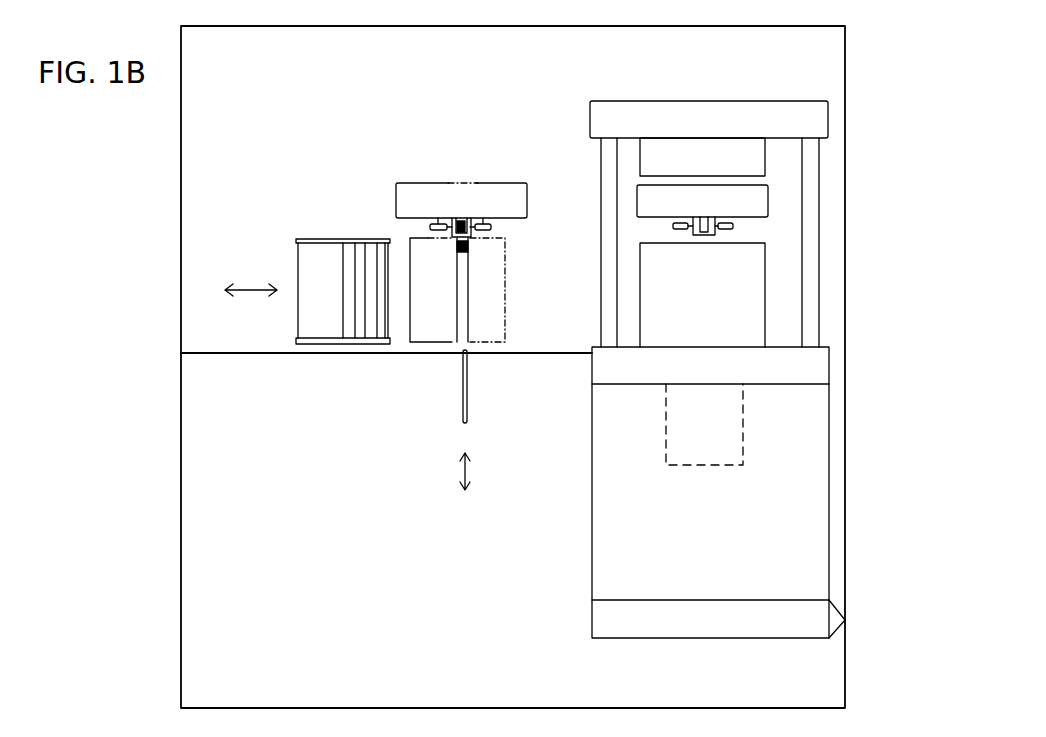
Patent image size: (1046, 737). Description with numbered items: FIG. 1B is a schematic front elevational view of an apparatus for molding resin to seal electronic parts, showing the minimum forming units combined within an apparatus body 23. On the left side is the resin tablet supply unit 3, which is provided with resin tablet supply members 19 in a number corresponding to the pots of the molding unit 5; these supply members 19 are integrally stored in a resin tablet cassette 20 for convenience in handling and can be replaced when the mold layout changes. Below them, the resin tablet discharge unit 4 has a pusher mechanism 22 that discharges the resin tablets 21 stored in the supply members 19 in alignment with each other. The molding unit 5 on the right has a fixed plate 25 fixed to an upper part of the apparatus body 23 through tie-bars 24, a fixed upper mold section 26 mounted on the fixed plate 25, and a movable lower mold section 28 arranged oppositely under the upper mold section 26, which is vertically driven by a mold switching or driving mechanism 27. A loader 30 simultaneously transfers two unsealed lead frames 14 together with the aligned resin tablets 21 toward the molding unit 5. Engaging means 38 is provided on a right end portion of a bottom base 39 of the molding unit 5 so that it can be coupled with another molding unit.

The resin tablet supply unit 3 is at (320, 210).
The resin tablet discharge unit 4 is at (443, 370).
The molding unit 5 is at (805, 88).
The unsealed lead frames 14 is at (437, 222).
The resin tablet supply members 19 is at (360, 314).
The resin tablet cassette 20 is at (304, 260).
The resin tablets 21 is at (461, 215).
The pusher mechanism 22 is at (467, 398).
The apparatus body 23 is at (208, 397).
The tie-bars 24 is at (605, 190).
The fixed plate 25 is at (600, 122).
The fixed upper mold section 26 is at (660, 158).
The mold switching or driving mechanism 27 is at (710, 428).
The movable lower mold section 28 is at (668, 283).
The loader 30 is at (413, 205).
The engaging means 38 is at (838, 614).
The bottom base 39 is at (735, 622).